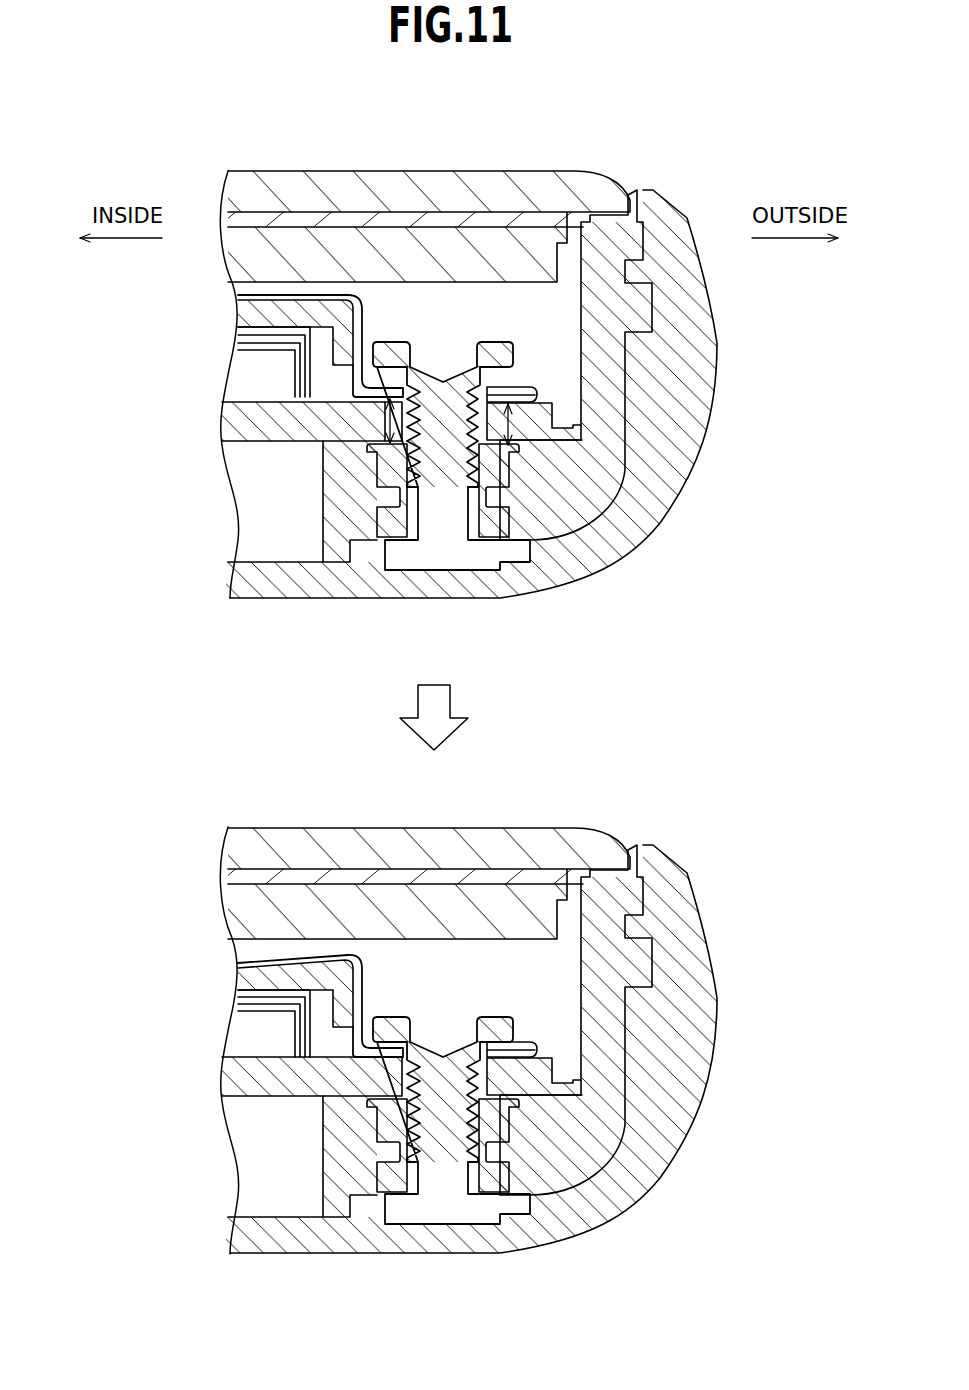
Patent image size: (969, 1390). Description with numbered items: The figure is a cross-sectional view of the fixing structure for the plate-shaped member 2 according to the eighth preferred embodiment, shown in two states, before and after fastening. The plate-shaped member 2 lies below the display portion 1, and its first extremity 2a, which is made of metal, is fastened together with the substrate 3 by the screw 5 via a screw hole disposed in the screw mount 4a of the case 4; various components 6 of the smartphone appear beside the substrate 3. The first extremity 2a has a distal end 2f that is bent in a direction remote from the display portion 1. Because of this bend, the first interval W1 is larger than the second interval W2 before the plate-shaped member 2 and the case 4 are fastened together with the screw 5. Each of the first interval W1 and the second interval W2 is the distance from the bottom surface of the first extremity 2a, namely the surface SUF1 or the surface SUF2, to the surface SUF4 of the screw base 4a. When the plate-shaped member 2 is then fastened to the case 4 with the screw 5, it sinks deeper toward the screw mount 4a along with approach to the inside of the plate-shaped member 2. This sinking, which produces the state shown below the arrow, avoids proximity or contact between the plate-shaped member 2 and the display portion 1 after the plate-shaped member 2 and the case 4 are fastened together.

The display portion 1 is at (510, 245).
The plate-shaped member 2 is at (318, 300).
The first extremity 2a is at (515, 392).
The distal end 2f is at (553, 435).
The substrate 3 is at (232, 420).
The case 4 is at (622, 548).
The screw mount 4a is at (513, 470).
The screw 5 is at (393, 355).
The various components 6 is at (262, 368).
The surface SUF1 is at (517, 403).
The surface SUF2 is at (357, 396).
The surface SUF4 is at (514, 448).
The first interval W1 is at (385, 432).
The second interval W2 is at (502, 420).